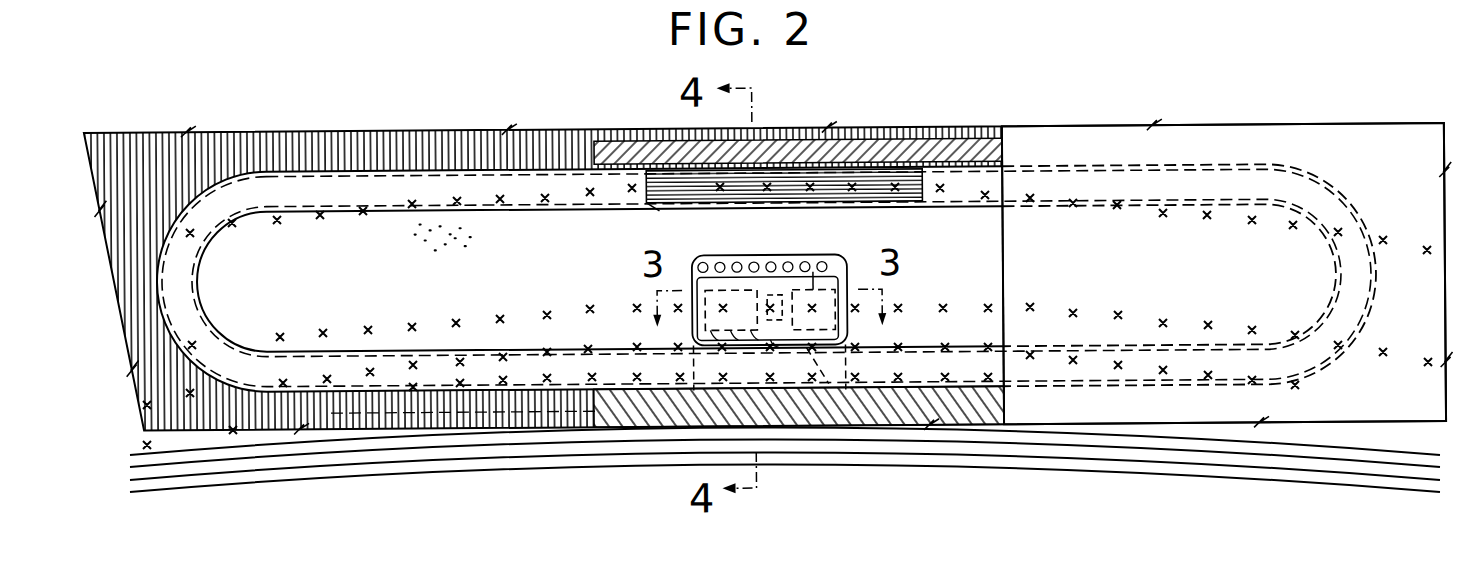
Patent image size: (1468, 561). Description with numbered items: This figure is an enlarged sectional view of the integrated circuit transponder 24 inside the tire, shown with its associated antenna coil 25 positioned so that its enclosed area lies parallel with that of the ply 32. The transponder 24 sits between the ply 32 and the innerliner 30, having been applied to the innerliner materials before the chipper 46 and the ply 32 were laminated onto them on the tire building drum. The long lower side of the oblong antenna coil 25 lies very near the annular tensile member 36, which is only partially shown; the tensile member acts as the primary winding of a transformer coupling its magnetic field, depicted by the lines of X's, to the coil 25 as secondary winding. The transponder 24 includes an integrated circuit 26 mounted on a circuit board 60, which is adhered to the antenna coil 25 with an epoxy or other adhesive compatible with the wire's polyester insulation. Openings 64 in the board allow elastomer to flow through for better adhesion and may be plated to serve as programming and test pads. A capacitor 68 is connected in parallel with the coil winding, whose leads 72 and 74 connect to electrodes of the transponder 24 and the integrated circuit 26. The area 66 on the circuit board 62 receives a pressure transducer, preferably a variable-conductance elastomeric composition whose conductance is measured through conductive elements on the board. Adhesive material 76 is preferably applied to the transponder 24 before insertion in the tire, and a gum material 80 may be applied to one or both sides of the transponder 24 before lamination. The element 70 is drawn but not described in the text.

The transponder 24 is at (557, 207).
The antenna coil 25 is at (882, 170).
The integrated circuit 26 is at (693, 318).
The innerliner 30 is at (1268, 128).
The ply 32 is at (312, 144).
The annular tensile member 36 is at (1372, 462).
The chipper 46 is at (632, 151).
The circuit board 60 is at (850, 258).
The circuit board 62 is at (703, 290).
The openings 64 is at (719, 262).
The pressure transducer space 66 is at (840, 314).
The capacitor 68 is at (777, 293).
The connecting lead 70 is at (813, 278).
The lead 72 is at (702, 392).
The lead 74 is at (826, 430).
The adhesive material 76 is at (662, 210).
The gum material 80 is at (380, 229).